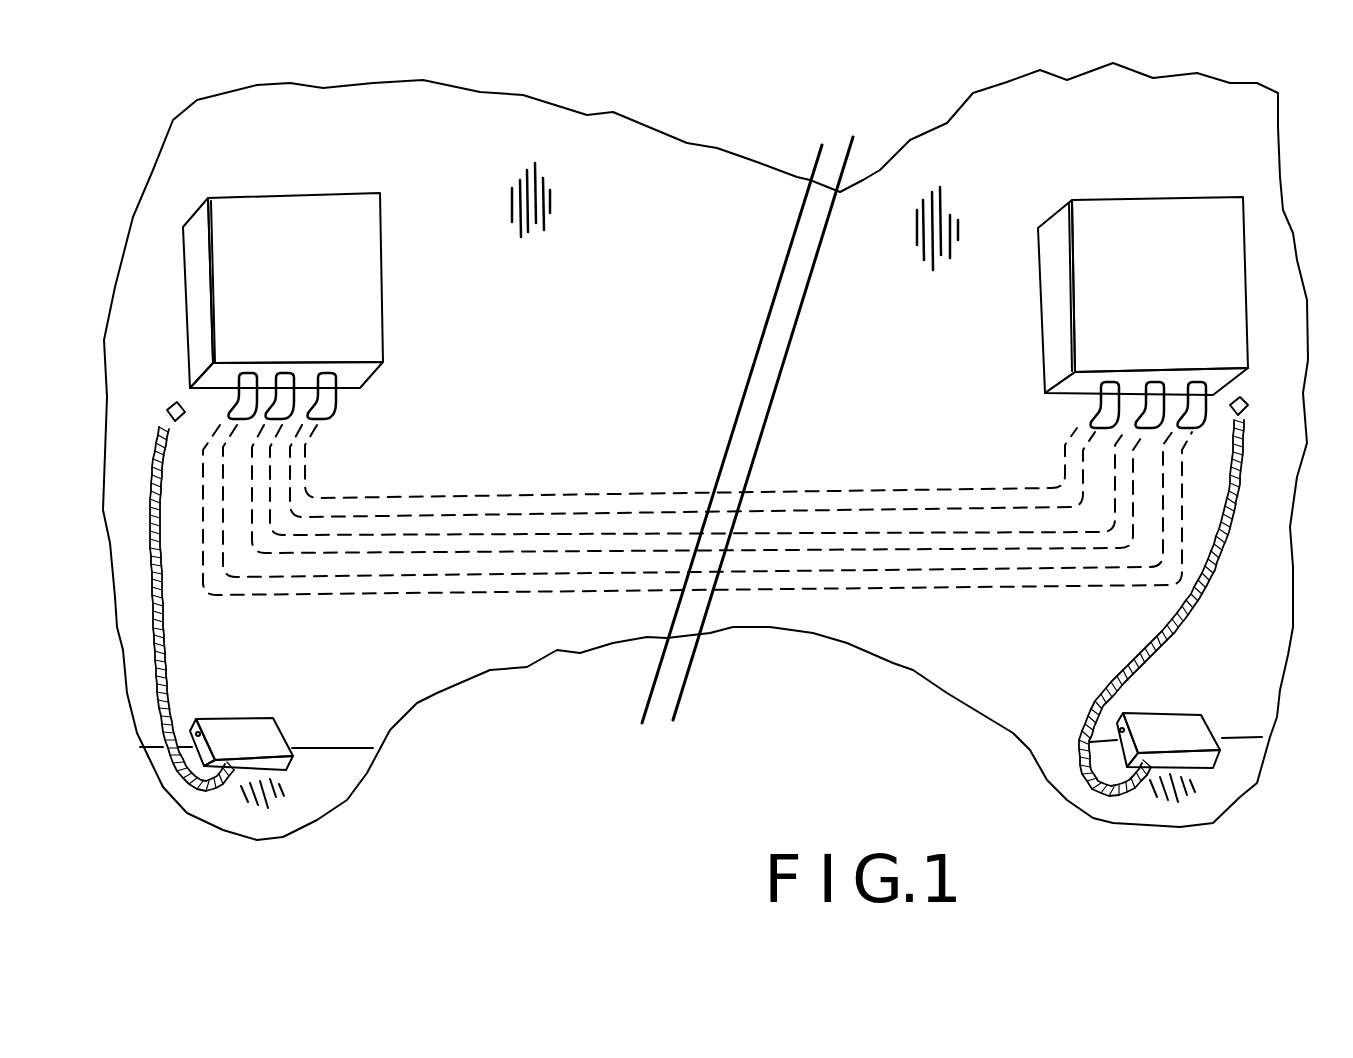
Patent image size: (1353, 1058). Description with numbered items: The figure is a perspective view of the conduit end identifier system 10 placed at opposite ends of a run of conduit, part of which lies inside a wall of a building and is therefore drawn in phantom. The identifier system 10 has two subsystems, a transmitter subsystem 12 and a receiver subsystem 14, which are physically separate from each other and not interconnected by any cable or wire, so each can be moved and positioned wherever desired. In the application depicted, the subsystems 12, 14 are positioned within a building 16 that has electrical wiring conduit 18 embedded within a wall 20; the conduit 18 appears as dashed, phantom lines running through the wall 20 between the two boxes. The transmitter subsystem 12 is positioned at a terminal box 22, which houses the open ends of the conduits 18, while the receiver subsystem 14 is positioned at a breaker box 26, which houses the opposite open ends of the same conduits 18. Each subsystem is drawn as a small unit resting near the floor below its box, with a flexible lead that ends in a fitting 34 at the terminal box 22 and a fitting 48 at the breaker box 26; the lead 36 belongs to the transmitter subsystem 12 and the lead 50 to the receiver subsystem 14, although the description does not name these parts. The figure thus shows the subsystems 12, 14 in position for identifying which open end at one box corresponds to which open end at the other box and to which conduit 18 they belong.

The conduit end identifier system 10 is at (147, 236).
The transmitter subsystem 12 is at (287, 677).
The receiver subsystem 14 is at (1225, 643).
The building 16 is at (914, 141).
The electrical wiring conduit 18 is at (481, 497).
The wall 20 is at (623, 287).
The terminal box 22 is at (357, 231).
The breaker box 26 is at (1225, 237).
The first connector 34 is at (166, 411).
The first sensor cable 36 is at (148, 522).
The second connector 48 is at (1250, 403).
The second sensor cable 50 is at (1235, 515).